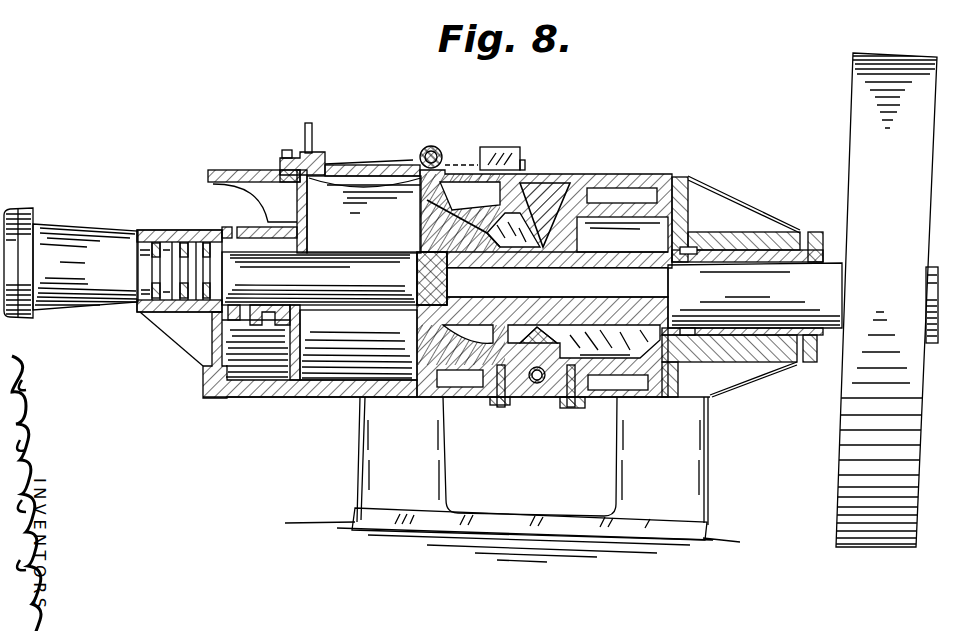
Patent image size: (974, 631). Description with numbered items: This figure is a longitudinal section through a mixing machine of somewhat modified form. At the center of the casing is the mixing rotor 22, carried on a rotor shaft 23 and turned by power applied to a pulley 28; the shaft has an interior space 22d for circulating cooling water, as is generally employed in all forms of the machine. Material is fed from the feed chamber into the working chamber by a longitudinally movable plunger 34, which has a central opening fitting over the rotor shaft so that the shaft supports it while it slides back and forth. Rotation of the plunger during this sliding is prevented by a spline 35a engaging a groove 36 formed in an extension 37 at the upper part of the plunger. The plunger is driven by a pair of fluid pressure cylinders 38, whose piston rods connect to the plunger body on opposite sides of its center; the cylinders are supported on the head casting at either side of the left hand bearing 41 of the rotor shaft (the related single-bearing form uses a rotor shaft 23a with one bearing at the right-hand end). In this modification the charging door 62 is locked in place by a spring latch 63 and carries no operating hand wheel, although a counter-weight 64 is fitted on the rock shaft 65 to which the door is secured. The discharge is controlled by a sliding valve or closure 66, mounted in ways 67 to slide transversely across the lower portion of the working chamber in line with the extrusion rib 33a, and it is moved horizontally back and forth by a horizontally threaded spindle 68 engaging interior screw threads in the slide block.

The rotor 22 is at (535, 200).
The interior space 22d is at (593, 288).
The rotor shaft 23 is at (362, 281).
The rotor shaft 23a is at (583, 258).
The pulley 28 is at (845, 472).
The extrusion rib 33a is at (567, 174).
The plunger 34 is at (307, 222).
The spline 35a is at (283, 171).
The groove 36 is at (232, 171).
The extension 37 is at (213, 184).
The fluid pressure cylinders 38 is at (88, 294).
The left hand bearing 41 is at (147, 232).
The charging door 62 is at (347, 163).
The spring latch 63 is at (307, 126).
The counter-weight 64 is at (497, 165).
The rock shaft 65 is at (437, 147).
The sliding valve or closure 66 is at (533, 392).
The ways 67 is at (498, 400).
The threaded spindle 68 is at (543, 383).